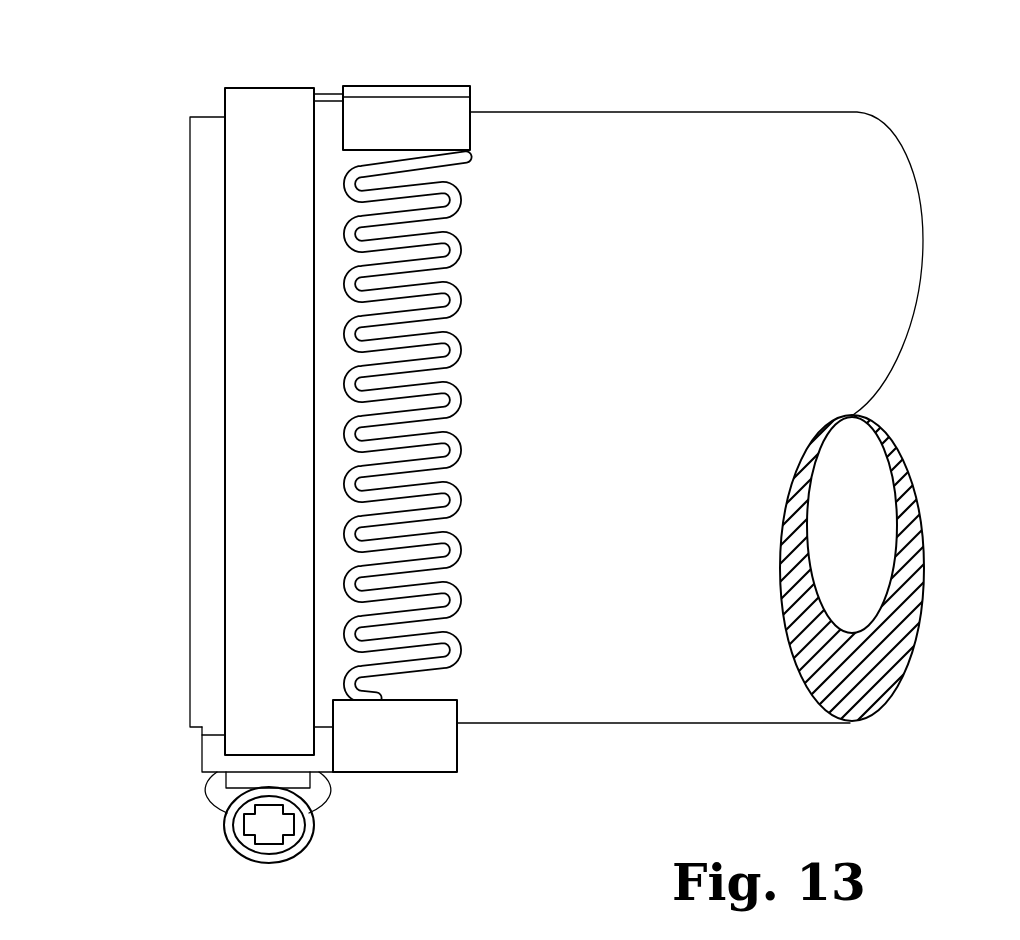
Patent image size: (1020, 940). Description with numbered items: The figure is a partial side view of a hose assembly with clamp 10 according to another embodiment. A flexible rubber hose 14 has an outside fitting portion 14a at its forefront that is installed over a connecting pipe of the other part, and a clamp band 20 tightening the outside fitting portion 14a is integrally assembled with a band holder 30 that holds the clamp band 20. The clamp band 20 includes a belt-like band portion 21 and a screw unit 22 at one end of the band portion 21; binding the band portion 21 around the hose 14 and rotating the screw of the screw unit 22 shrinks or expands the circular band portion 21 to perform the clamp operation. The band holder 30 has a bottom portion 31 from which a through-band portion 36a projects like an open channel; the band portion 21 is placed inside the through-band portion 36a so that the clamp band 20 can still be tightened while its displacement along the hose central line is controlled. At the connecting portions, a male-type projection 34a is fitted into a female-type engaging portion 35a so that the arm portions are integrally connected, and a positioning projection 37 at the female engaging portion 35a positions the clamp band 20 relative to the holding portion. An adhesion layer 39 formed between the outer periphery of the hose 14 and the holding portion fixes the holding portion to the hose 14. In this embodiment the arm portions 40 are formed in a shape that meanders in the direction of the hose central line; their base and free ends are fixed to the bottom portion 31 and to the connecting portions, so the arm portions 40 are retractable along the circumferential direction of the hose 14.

The hose assembly with clamp 10 is at (812, 85).
The hose 14 is at (657, 697).
The outside fitting portion 14a is at (205, 375).
The clamp band 20 is at (194, 474).
The band portion 21 is at (245, 238).
The screw unit 22 is at (286, 870).
The band holder 30 is at (485, 79).
The bottom portion 31 is at (400, 752).
The male-type projection 34a is at (460, 134).
The female-type engaging portion 35a is at (406, 49).
The through-band portion 36a is at (196, 760).
The positioning projection 37 is at (330, 104).
The adhesion layer 39 is at (205, 731).
The arm portion 40 is at (450, 307).